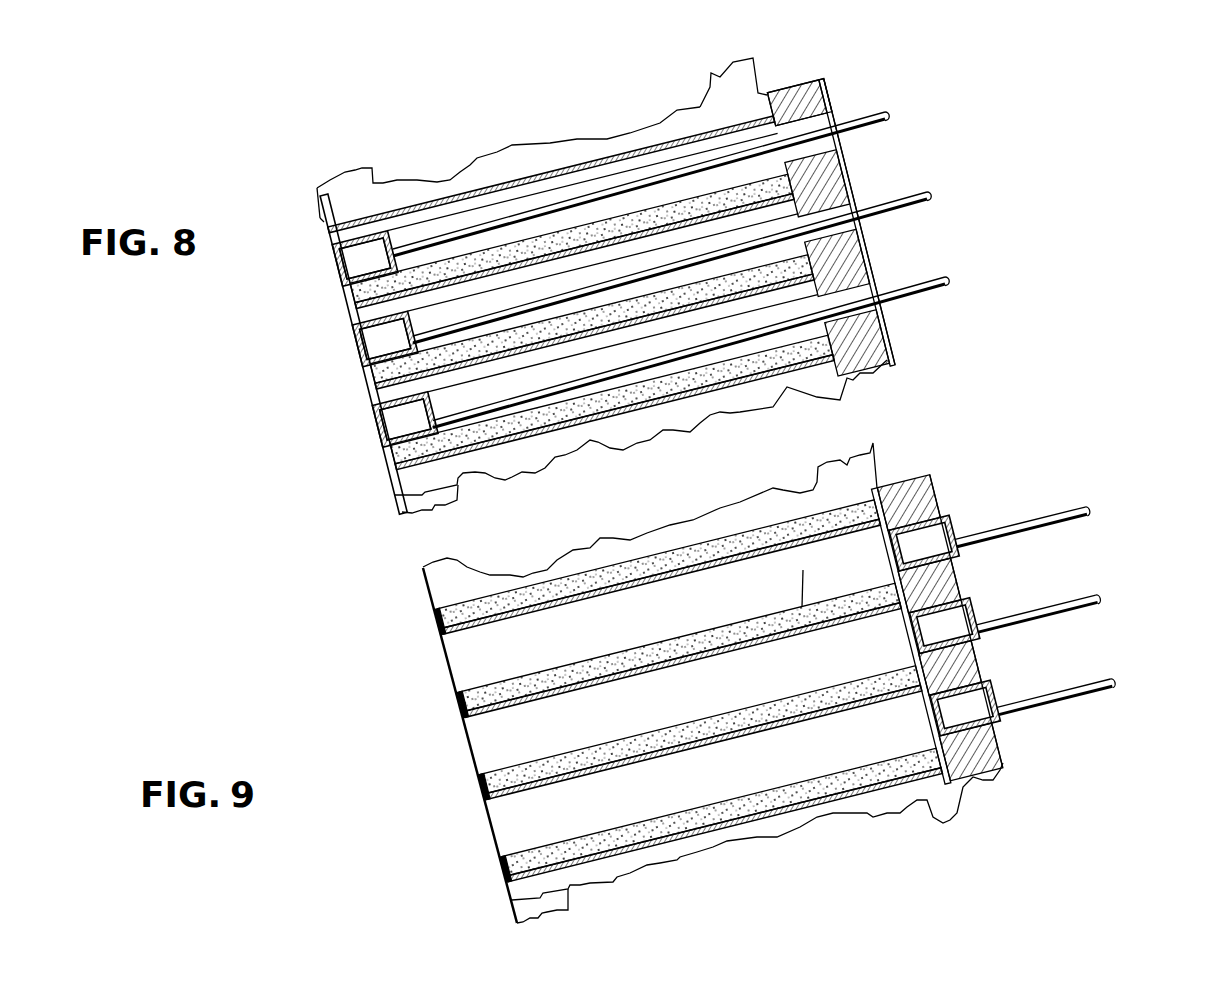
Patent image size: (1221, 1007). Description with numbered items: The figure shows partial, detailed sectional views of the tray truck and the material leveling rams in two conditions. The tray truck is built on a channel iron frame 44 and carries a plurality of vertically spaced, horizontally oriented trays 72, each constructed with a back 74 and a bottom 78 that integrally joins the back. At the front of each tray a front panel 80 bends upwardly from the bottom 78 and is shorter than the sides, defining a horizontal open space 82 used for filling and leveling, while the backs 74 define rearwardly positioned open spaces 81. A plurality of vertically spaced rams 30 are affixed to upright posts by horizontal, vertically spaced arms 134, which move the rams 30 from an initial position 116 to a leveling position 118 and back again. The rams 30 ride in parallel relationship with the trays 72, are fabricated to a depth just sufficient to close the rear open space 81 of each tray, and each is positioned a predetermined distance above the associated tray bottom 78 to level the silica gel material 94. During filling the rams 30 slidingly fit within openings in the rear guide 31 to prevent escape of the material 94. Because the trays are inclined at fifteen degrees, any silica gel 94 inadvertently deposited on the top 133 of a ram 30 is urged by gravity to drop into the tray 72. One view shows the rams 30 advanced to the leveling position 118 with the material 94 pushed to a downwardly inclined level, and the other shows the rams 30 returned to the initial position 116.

In FIG. 8, the ram 30 is at (356, 260).
In FIG. 9, the ram 30 is at (937, 530).
In FIG. 8, the rear guide 31 is at (821, 82).
In FIG. 9, the rear guide 31 is at (923, 510).
In FIG. 8, the channel iron frame 44 is at (358, 172).
In FIG. 9, the channel iron frame 44 is at (470, 565).
In FIG. 8, the tray 72 is at (660, 124).
In FIG. 9, the tray 72 is at (862, 795).
In FIG. 8, the back 74 is at (768, 93).
In FIG. 9, the back 74 is at (883, 487).
In FIG. 8, the bottom 78 is at (473, 188).
In FIG. 9, the bottom 78 is at (736, 545).
In FIG. 8, the front panel 80 is at (322, 220).
In FIG. 9, the front panel 80 is at (430, 630).
In FIG. 8, the rear open space 81 is at (848, 187).
In FIG. 9, the rear open space 81 is at (890, 543).
In FIG. 8, the open space 82 is at (343, 247).
In FIG. 9, the open space 82 is at (436, 600).
In FIG. 8, the silica gel material 94 is at (560, 233).
In FIG. 9, the silica gel material 94 is at (822, 508).
In FIG. 9, the initial position 116 is at (965, 520).
In FIG. 8, the leveling position 118 is at (845, 108).
In FIG. 8, the top of ram 133 is at (347, 220).
In FIG. 8, the arm 134 is at (889, 116).
In FIG. 9, the arm 134 is at (1082, 505).